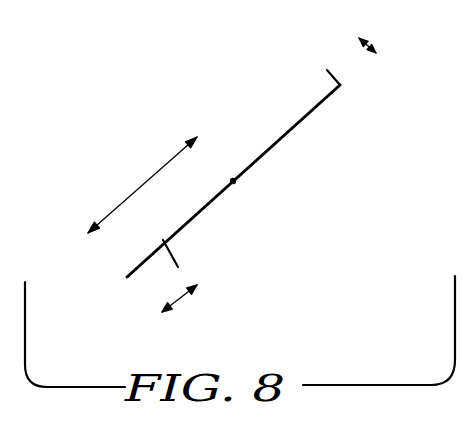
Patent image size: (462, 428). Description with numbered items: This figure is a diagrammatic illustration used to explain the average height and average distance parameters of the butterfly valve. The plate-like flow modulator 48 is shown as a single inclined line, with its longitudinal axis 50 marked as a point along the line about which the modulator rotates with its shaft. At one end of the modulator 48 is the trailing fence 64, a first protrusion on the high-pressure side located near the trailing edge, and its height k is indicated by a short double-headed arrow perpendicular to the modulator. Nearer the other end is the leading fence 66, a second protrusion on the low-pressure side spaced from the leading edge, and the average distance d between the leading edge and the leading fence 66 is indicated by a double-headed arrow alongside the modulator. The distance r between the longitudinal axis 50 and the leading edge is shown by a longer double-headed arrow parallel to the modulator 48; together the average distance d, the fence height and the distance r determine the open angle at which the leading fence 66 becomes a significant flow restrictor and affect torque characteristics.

The flow modulator 48 is at (289, 132).
The longitudinal axis 50 is at (236, 181).
The trailing fence 64 is at (328, 71).
The leading fence 66 is at (170, 252).
The distance r is at (129, 198).
The height k is at (368, 46).
The average distance d is at (181, 299).